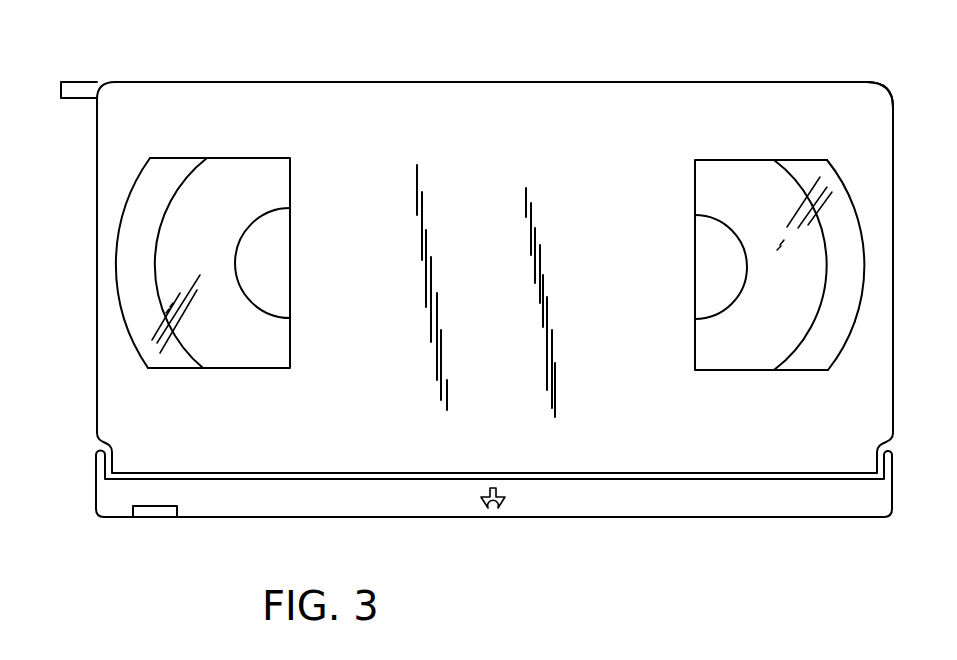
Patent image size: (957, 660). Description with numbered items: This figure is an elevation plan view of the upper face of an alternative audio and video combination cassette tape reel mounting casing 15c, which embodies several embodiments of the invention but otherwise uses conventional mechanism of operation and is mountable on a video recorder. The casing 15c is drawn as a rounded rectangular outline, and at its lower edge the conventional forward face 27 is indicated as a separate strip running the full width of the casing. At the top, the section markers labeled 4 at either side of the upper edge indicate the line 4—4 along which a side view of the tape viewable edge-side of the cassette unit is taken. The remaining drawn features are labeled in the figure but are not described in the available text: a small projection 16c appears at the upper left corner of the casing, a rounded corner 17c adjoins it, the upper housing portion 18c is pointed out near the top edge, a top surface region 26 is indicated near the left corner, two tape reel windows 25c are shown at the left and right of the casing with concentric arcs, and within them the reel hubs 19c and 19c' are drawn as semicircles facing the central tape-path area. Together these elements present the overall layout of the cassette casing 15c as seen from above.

The cassette tape reel(s) mounting casing 15c is at (465, 78).
The projection 16c is at (74, 99).
The rounded corner 17c is at (99, 99).
The upper half housing 18c is at (647, 103).
The reel hub 19c is at (320, 263).
The reel hub 19c' is at (677, 267).
The tape reel window 25c is at (260, 175).
The top surface 26 is at (137, 97).
The forward face 27 is at (557, 519).
The line 4— 4 is at (55, 63).